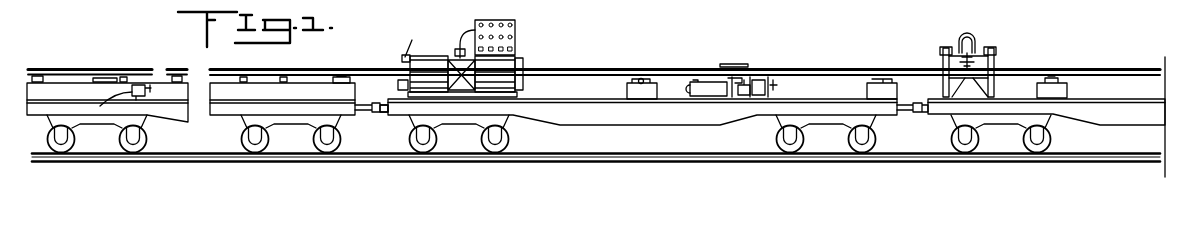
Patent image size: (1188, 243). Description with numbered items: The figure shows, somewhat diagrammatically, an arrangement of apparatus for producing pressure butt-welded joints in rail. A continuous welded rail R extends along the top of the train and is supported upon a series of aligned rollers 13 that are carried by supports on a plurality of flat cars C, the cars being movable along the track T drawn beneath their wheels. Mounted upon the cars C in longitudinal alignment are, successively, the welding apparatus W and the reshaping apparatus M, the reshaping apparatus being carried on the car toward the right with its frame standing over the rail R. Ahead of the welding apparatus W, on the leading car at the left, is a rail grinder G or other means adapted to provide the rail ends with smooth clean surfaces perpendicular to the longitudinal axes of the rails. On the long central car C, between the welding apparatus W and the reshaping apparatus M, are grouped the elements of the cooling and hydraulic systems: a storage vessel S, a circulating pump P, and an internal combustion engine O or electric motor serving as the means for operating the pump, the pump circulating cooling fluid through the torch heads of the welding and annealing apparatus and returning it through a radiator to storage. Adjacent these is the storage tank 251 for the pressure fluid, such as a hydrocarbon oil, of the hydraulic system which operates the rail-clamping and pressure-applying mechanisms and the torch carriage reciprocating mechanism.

The rail grinder G is at (155, 82).
The rollers 13 is at (340, 76).
The welding apparatus W is at (452, 53).
The continuous welded rail R is at (597, 53).
The internal combustion engine O is at (700, 82).
The storage vessel S is at (742, 65).
The circulating pump P is at (733, 95).
The storage tank 251 is at (770, 81).
The reshaping apparatus M is at (957, 52).
The flat cars C is at (590, 118).
The track T is at (682, 162).